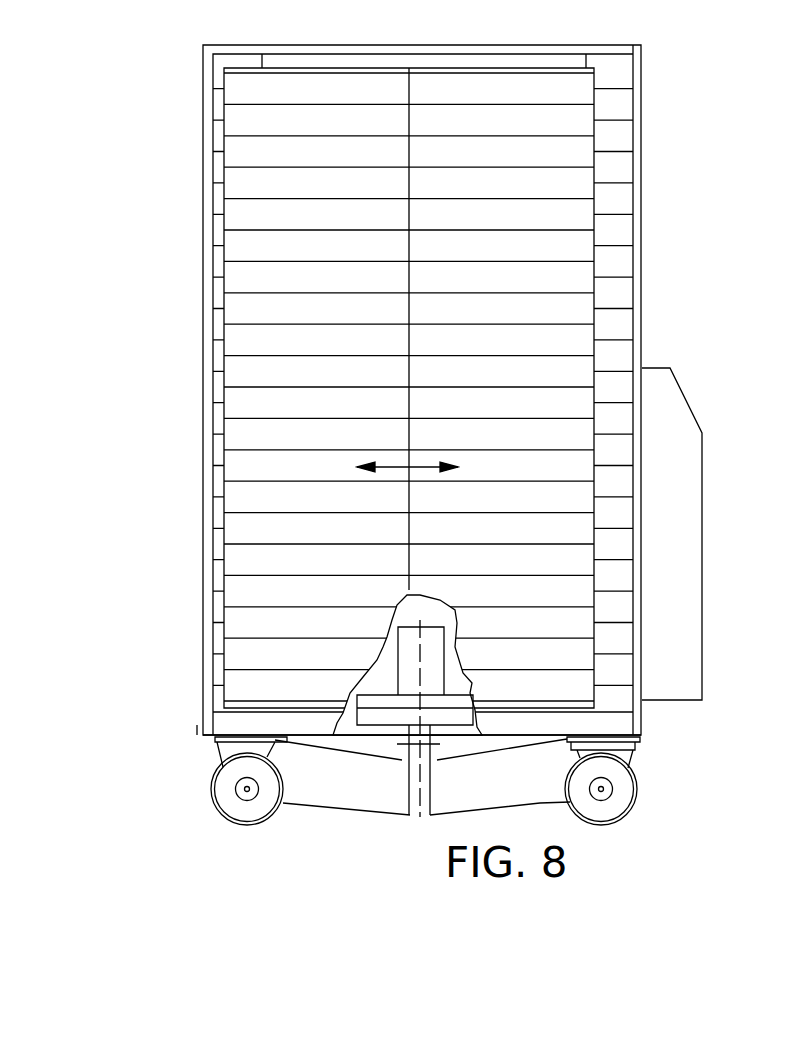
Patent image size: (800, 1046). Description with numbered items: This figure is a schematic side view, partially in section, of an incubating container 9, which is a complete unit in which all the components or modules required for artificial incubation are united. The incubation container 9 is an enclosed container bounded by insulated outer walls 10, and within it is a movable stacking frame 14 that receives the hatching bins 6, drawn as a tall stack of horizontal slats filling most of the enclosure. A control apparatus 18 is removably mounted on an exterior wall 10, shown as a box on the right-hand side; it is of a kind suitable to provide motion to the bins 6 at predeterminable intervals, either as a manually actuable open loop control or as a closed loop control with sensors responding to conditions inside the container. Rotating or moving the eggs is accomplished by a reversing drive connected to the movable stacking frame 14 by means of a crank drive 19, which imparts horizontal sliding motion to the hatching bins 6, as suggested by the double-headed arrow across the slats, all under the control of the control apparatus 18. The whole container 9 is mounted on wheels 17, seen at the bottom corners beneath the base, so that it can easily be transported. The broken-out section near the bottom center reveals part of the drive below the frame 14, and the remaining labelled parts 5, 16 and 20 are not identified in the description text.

The insulated outer walls 10 is at (207, 173).
The frame 5 is at (217, 228).
The incubation container 9 is at (410, 311).
The hatching bins 6 is at (577, 308).
The central support post 16 is at (412, 685).
The movable stacking frame 14 is at (583, 703).
The crank drive 19 is at (663, 703).
The control apparatus 18 is at (680, 440).
The wheels 17 is at (242, 796).
The right caster wheel 20 is at (623, 795).